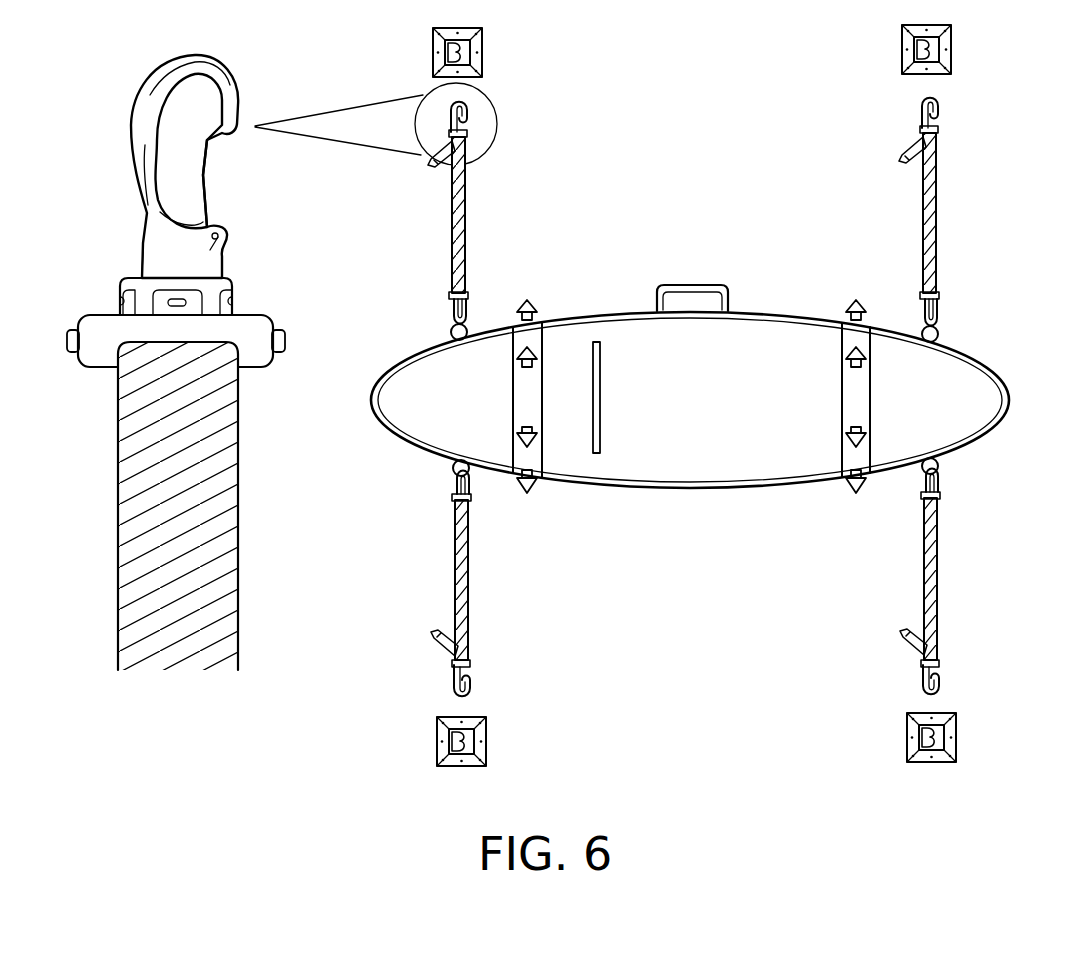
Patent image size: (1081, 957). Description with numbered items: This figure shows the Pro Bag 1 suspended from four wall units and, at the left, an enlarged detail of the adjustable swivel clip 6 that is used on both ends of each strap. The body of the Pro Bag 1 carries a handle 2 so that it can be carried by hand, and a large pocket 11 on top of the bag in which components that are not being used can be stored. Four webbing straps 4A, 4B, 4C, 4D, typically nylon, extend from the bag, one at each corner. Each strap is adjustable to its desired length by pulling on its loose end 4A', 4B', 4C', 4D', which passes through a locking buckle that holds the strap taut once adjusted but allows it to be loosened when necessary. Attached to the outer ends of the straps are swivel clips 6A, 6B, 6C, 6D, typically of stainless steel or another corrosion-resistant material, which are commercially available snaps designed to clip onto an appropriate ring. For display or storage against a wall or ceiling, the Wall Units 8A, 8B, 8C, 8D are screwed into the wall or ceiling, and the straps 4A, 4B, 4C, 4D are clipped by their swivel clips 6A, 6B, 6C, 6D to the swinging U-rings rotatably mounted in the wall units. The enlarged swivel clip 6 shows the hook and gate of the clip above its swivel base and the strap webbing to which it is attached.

The Pro Bag 1 is at (1002, 388).
The handle 2 is at (688, 284).
The large pocket 11 is at (604, 398).
The adjustable swivel clip 6 is at (148, 157).
The strap 4A is at (502, 230).
The strap 4B is at (972, 229).
The strap 4C is at (974, 565).
The strap 4D is at (505, 566).
The loose end 4A' is at (400, 170).
The loose end 4B' is at (868, 168).
The loose end 4C' is at (866, 640).
The loose end 4D' is at (398, 640).
The swivel clip 6A is at (470, 104).
The swivel clip 6B is at (936, 100).
The swivel clip 6C is at (941, 681).
The swivel clip 6D is at (471, 683).
The Wall Unit 8A is at (484, 52).
The Wall Unit 8B is at (955, 48).
The Wall Unit 8C is at (960, 740).
The Wall Unit 8D is at (488, 742).